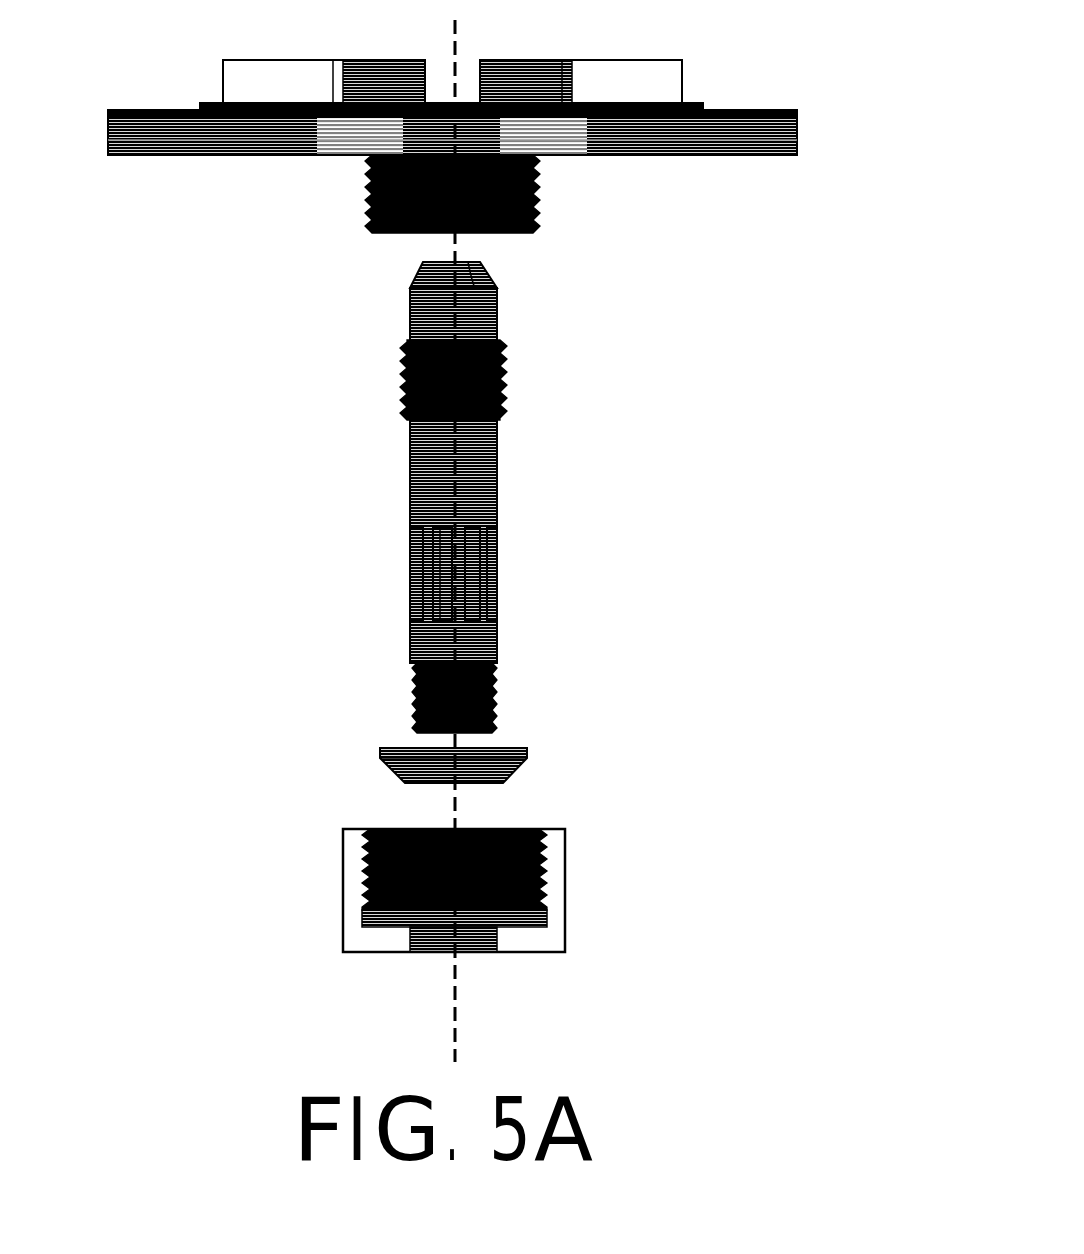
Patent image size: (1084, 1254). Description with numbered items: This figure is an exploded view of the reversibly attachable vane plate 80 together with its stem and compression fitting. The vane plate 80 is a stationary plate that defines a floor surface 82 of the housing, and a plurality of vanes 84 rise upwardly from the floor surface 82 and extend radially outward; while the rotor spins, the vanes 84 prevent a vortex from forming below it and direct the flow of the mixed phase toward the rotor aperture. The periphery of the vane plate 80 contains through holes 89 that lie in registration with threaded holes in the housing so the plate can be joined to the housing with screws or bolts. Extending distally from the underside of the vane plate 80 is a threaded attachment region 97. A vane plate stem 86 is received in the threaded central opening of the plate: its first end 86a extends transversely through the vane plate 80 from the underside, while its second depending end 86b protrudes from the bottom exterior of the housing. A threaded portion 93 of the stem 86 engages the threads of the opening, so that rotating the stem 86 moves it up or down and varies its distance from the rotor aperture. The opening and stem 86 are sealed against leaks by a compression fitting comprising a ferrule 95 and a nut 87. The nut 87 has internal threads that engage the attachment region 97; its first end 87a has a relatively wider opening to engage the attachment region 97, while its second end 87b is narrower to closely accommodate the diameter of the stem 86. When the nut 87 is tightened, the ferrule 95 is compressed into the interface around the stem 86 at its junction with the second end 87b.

The vane plate 80 is at (111, 71).
The floor surface 82 is at (670, 138).
The vanes 84 is at (645, 88).
The through holes 89 is at (297, 148).
The attachment region 97 is at (540, 185).
The vane plate stem 86 is at (415, 495).
The first end of the stem 86a is at (497, 288).
The second depending end of the stem 86b is at (492, 717).
The threaded portion of the stem 93 is at (400, 387).
The ferrule 95 is at (385, 752).
The nut 87 is at (428, 895).
The first end of the nut 87a is at (472, 822).
The second end of the nut 87b is at (475, 953).